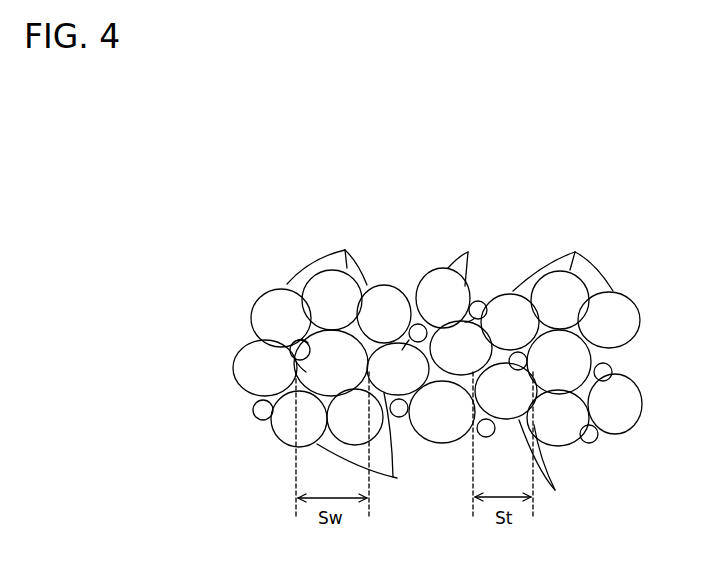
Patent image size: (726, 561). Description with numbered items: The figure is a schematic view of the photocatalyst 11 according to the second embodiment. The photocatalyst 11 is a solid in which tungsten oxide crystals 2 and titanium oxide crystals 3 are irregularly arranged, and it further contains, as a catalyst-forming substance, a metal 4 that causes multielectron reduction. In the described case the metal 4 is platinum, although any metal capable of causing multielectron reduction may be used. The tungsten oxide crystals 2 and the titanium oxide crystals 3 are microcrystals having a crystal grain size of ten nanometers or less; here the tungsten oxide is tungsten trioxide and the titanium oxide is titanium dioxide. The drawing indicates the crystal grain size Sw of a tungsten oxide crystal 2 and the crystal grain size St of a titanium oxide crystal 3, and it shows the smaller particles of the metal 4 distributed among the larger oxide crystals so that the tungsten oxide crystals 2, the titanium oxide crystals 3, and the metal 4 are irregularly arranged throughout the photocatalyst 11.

The tungsten oxide crystals 2 is at (296, 368).
The titanium oxide crystals 3 is at (630, 463).
The metal 4 is at (290, 351).
The photocatalyst 11 is at (609, 232).